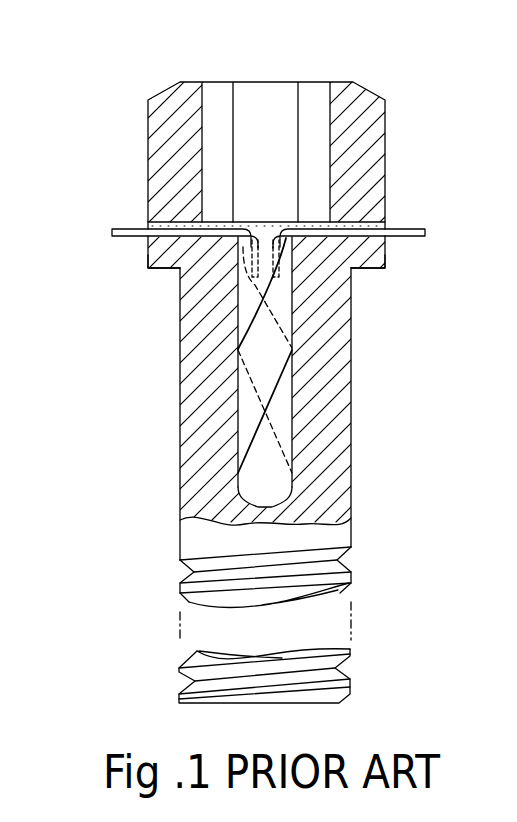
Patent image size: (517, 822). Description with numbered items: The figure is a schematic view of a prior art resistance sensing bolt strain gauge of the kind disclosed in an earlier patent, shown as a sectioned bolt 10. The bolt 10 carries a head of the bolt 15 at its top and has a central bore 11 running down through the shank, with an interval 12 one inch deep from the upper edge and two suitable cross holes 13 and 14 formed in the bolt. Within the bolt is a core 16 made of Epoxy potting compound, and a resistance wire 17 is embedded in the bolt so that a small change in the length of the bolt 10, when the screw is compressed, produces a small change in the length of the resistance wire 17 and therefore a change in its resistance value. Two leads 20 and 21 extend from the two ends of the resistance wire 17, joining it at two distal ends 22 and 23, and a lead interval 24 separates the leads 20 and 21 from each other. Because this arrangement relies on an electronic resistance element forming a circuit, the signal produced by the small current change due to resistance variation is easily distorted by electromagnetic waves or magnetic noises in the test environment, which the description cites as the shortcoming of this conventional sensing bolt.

The bolt 10 is at (180, 483).
The central bore 11 is at (290, 498).
The interval 12 is at (208, 213).
The cross hole 13 is at (147, 238).
The cross hole 14 is at (383, 238).
The head of the bolt 15 is at (367, 173).
The core 16 is at (248, 407).
The resistance wire 17 is at (280, 380).
The lead 20 is at (120, 230).
The lead 21 is at (408, 235).
The distal end 22 is at (250, 223).
The distal end 23 is at (285, 224).
The lead interval 24 is at (268, 225).